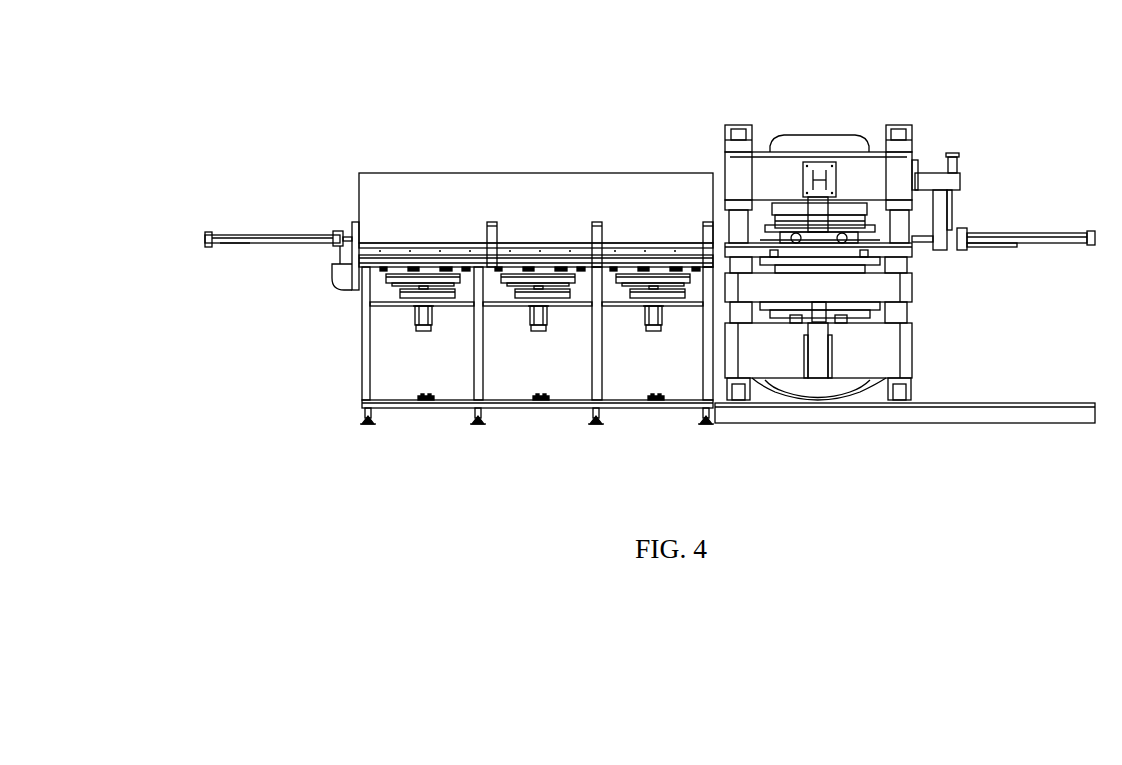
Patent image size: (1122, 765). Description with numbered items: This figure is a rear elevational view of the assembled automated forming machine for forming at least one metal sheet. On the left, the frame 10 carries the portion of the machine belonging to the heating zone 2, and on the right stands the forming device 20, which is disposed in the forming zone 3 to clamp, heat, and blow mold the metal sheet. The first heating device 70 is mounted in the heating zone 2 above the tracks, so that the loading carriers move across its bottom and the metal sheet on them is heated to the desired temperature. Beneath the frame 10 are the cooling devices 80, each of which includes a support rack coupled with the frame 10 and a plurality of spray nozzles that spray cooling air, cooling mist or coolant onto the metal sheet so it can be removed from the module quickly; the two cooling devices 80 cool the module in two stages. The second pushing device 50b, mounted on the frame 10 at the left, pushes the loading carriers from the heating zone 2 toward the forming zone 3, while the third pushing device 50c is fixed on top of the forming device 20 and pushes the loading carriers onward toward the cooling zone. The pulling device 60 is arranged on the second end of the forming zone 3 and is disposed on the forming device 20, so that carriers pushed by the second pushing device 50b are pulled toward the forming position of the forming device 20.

The heating zone 2 is at (454, 124).
The forming zone 3 is at (825, 101).
The frame 10 is at (363, 325).
The forming device 20 is at (912, 287).
The second pushing device 50b is at (307, 233).
The third pushing device 50c is at (822, 170).
The pulling device 60 is at (946, 211).
The first heating device 70 is at (543, 188).
The cooling device 80 is at (399, 280).